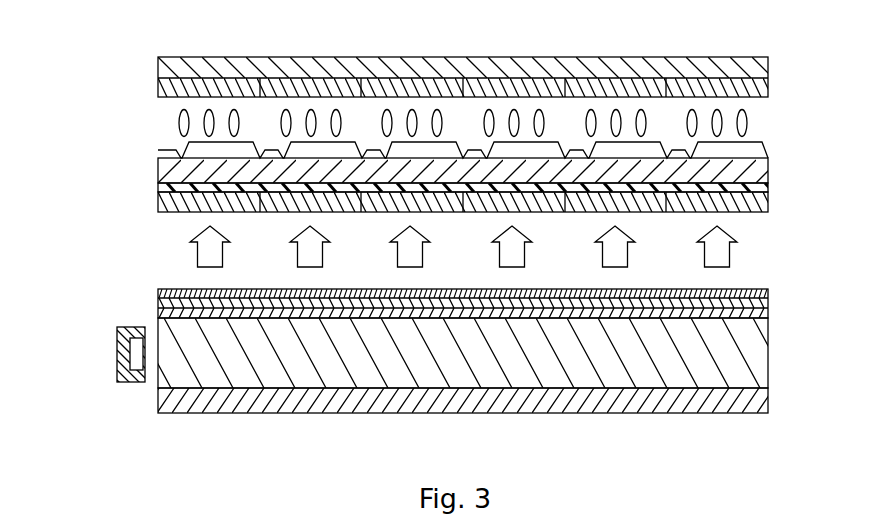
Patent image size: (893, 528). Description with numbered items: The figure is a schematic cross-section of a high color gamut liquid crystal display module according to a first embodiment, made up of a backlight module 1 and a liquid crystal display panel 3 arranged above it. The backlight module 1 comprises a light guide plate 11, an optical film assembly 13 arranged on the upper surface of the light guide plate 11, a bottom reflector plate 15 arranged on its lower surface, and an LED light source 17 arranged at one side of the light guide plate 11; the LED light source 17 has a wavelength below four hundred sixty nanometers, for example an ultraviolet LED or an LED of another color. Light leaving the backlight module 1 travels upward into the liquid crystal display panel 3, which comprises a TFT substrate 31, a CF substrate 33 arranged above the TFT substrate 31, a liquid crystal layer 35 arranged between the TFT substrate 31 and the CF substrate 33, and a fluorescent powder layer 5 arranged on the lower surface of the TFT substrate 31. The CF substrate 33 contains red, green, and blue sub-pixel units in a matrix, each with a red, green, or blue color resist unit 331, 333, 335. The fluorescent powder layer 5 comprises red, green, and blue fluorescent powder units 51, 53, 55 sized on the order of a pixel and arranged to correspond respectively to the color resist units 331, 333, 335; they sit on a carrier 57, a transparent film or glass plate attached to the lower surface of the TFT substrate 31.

The backlight module 1 is at (462, 366).
The light guide plate 11 is at (250, 353).
The optical film assembly 13 is at (210, 315).
The bottom reflector plate 15 is at (376, 398).
The LED light source 17 is at (138, 355).
The liquid crystal display panel 3 is at (442, 141).
The TFT substrate 31 is at (252, 173).
The CF substrate 33 is at (404, 48).
The red color resist unit 331 is at (525, 78).
The green color resist unit 333 is at (628, 83).
The blue color resist unit 335 is at (708, 83).
The liquid crystal layer 35 is at (245, 127).
The fluorescent powder layer 5 is at (469, 236).
The red fluorescent powder unit 51 is at (530, 213).
The green fluorescent powder unit 53 is at (617, 203).
The blue fluorescent powder unit 55 is at (786, 209).
The carrier 57 is at (227, 188).